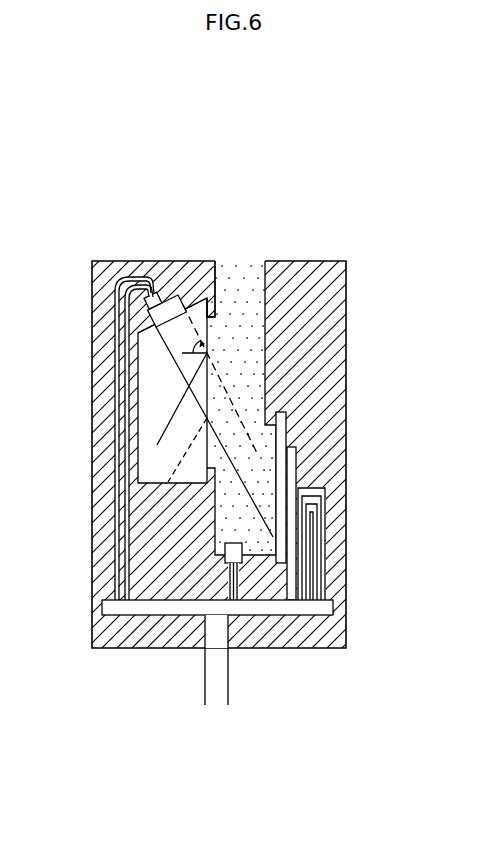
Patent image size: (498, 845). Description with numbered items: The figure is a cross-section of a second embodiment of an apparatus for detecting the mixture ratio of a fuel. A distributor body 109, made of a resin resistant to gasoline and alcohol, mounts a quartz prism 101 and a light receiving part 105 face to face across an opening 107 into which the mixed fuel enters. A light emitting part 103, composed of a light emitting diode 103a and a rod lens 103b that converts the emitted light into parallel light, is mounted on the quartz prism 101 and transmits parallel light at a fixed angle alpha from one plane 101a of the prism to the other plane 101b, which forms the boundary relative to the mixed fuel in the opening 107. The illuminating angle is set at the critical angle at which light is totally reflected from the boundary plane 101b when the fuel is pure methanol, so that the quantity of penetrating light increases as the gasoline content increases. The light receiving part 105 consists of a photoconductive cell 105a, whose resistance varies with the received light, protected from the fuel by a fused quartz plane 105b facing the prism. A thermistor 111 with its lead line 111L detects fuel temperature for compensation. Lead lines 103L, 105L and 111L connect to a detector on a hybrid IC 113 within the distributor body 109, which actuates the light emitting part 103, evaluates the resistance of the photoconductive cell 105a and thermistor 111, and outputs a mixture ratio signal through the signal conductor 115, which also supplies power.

The quartz prism 101 is at (199, 365).
The one plane of the quartz prism 101a is at (150, 324).
The boundary plane 101b is at (215, 327).
The light emitting part 103 is at (175, 233).
The light emitting diode 103a is at (152, 277).
The rod lens 103b is at (178, 295).
The lead lines of the light emitting part 103L is at (120, 527).
The light receiving part 105 is at (352, 497).
The photoconductive cell 105a is at (290, 465).
The fused quartz plane 105b is at (280, 437).
The lead lines of the light receiving part 105L is at (317, 533).
The opening 107 is at (235, 273).
The distributor body 109 is at (340, 365).
The thermistor 111 is at (181, 625).
The lead line of the thermistor 111L is at (237, 583).
The hybrid IC 113 is at (333, 607).
The signal conductor 115 is at (205, 680).